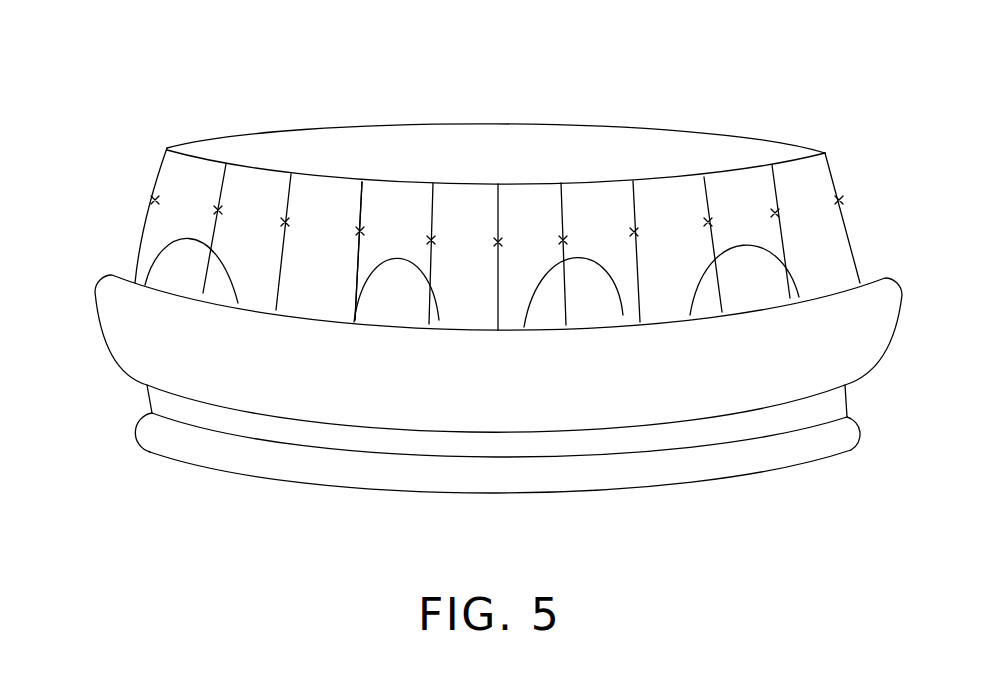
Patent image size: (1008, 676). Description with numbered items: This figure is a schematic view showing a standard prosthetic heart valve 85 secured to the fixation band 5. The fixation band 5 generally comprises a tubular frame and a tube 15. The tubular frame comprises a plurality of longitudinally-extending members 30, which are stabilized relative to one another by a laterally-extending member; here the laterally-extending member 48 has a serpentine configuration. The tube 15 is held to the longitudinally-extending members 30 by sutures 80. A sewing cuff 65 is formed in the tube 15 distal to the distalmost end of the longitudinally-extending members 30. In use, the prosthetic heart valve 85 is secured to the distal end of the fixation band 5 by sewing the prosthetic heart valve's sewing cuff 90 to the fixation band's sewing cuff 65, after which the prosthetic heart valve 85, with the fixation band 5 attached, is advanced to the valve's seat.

The fixation band 5 is at (466, 180).
The tube 15 is at (93, 273).
The longitudinally-extending members 30 is at (434, 268).
The laterally-extending member 48 is at (391, 250).
The sewing cuff 65 is at (145, 404).
The sutures 80 is at (711, 217).
The prosthetic heart valve 85 is at (471, 490).
The sewing cuff 90 is at (400, 478).